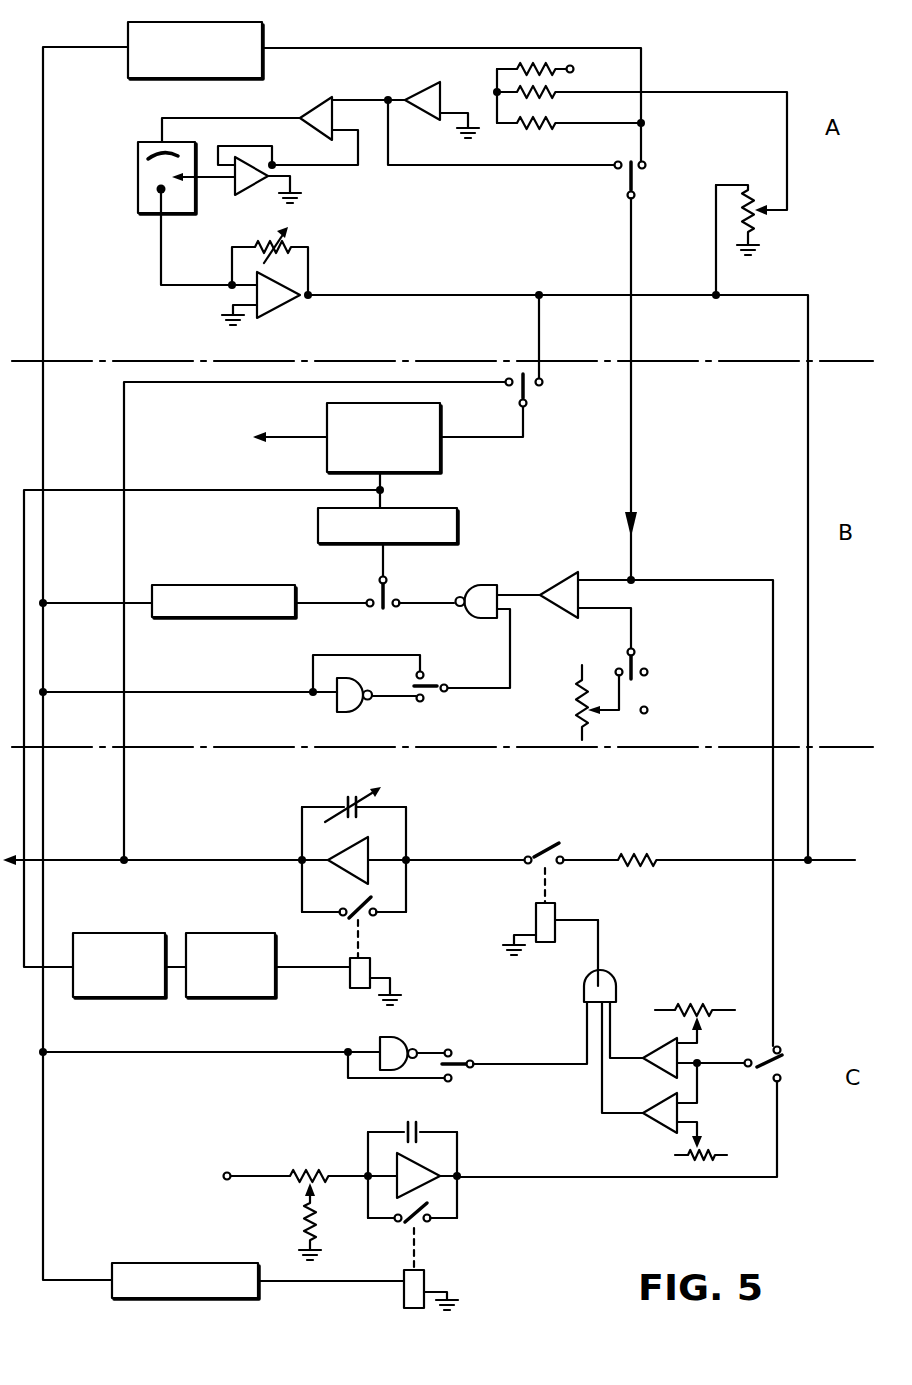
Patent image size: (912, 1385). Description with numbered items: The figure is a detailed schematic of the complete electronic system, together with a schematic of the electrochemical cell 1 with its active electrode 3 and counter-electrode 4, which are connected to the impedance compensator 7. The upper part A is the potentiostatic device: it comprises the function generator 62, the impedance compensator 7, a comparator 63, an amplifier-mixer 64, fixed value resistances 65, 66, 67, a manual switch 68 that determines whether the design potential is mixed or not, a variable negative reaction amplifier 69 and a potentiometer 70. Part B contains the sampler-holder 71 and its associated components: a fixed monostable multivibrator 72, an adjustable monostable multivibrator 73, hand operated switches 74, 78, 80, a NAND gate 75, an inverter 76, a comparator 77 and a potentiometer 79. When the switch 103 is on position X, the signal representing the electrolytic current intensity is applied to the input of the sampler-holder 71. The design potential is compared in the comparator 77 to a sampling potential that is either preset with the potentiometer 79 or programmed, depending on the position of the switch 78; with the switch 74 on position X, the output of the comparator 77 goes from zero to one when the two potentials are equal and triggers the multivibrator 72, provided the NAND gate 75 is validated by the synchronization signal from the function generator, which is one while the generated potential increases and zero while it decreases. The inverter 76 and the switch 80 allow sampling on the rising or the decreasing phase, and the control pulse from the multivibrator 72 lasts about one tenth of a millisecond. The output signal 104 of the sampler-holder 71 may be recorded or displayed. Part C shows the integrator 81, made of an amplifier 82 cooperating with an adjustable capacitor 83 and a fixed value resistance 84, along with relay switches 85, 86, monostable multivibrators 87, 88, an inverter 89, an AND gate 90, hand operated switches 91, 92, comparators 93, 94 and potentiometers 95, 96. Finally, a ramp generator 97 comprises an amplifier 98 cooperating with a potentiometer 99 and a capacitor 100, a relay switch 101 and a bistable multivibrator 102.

The electrochemical cell 1 is at (126, 166).
The active electrode 3 is at (157, 191).
The counter-electrode 4 is at (151, 153).
The impedance compensator 7 is at (248, 197).
The function generator 62 is at (128, 27).
The comparator 63 is at (318, 102).
The amplifier-mixer 64 is at (422, 92).
The fixed value resistance 65 is at (538, 65).
The fixed value resistance 66 is at (558, 91).
The fixed value resistance 67 is at (549, 126).
The manual switch 68 is at (656, 176).
The variable negative reaction amplifier 69 is at (221, 301).
The potentiometer 70 is at (774, 232).
The sampler-holder 71 is at (441, 458).
The monostable multivibrator 72 is at (458, 523).
The monostable multivibrator 73 is at (214, 583).
The hand operated switch 74 is at (375, 613).
The NAND gate 75 is at (481, 588).
The inverter 76 is at (350, 713).
The comparator 77 is at (566, 578).
The hand operated switch 78 is at (658, 660).
The potentiometer 79 is at (576, 700).
The hand operated switch 80 is at (428, 692).
The integrator 81 is at (276, 831).
The amplifier 82 is at (352, 865).
The adjustable capacitor 83 is at (344, 802).
The fixed value resistance 84 is at (645, 852).
The relay switch 85 is at (362, 926).
The relay switch 86 is at (534, 916).
The monostable multivibrator 87 is at (136, 935).
The monostable multivibrator 88 is at (241, 934).
The inverter 89 is at (399, 1046).
The AND gate 90 is at (605, 983).
The hand operated switch 91 is at (466, 1060).
The hand operated switch 92 is at (775, 1064).
The comparator 93 is at (657, 1066).
The comparator 94 is at (655, 1123).
The potentiometer 95 is at (702, 1000).
The potentiometer 96 is at (700, 1162).
The ramp generator 97 is at (344, 1131).
The amplifier 98 is at (417, 1171).
The potentiometer 99 is at (317, 1174).
The capacitor 100 is at (421, 1126).
The relay switch 101 is at (420, 1226).
The bistable multivibrator 102 is at (222, 1299).
The switch 103 is at (531, 394).
The output signal 104 is at (302, 434).